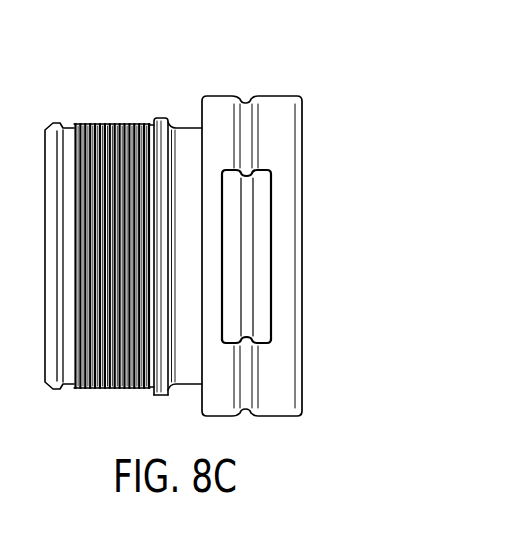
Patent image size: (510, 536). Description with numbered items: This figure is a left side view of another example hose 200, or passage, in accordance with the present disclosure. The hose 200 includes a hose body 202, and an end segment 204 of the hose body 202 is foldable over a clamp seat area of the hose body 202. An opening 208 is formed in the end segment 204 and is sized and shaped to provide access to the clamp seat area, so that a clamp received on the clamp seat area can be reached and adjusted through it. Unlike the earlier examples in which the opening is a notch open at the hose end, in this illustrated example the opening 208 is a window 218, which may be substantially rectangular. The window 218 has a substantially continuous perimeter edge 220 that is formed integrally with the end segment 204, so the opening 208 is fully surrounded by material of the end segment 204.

The hose 200 is at (117, 125).
The hose body 202 is at (148, 388).
The end segment 204 is at (222, 95).
The opening 208 is at (312, 255).
The window 218 is at (268, 221).
The perimeter edge 220 is at (268, 318).